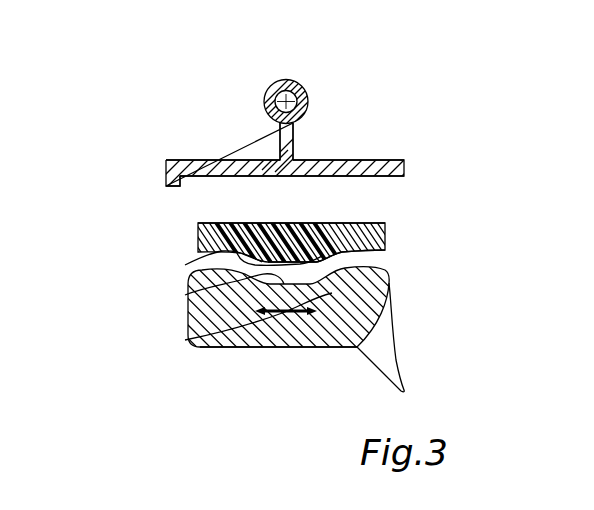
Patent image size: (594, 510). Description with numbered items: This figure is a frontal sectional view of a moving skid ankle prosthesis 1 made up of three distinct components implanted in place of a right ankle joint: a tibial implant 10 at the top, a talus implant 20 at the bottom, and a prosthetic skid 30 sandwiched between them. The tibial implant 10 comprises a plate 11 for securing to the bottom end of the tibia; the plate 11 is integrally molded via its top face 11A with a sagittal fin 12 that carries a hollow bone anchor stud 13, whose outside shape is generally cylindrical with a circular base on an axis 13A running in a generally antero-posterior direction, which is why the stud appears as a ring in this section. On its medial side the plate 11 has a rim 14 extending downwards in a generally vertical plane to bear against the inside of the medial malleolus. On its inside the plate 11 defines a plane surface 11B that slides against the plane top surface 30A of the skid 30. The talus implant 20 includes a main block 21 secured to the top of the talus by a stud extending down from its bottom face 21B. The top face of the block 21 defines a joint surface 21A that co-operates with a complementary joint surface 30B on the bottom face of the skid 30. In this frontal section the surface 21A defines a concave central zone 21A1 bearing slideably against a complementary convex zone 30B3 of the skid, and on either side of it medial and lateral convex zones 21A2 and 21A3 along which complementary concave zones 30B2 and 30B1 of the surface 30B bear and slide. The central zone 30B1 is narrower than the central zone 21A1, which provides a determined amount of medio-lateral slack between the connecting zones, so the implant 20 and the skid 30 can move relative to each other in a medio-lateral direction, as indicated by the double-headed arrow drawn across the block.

The assembly 1 is at (188, 116).
The tibial implant 10 is at (158, 157).
The plate 11 is at (405, 168).
The top face 11A is at (232, 156).
The plane surface 11B is at (205, 179).
The sagittal fin 12 is at (293, 137).
The hollow bone anchor stud 13 is at (292, 80).
The axis 13A is at (272, 83).
The rim 14 is at (166, 170).
The talus implant 20 is at (402, 318).
The main block 21 is at (323, 348).
The joint surface 21A is at (52, 265).
The concave central zone 21A1 is at (185, 295).
The medial convex zone 21A2 is at (185, 265).
The lateral convex zone 21A3 is at (185, 340).
The bottom face 21B is at (253, 352).
The prosthetic skid 30 is at (195, 238).
The plane top surface 30A is at (315, 220).
The complementary joint surface 30B is at (538, 180).
The central zone 30B1 is at (386, 250).
The concave zone 30B2 is at (385, 222).
The convex zone 30B3 is at (292, 265).